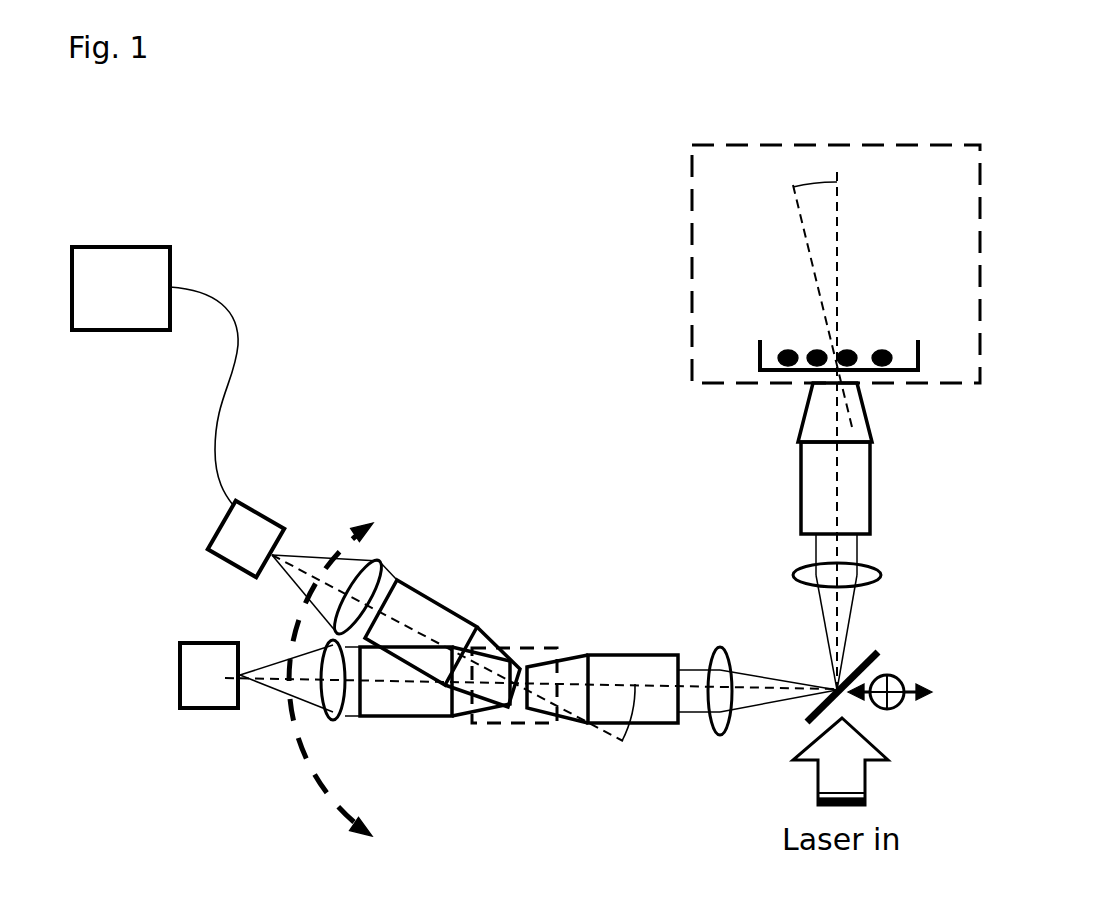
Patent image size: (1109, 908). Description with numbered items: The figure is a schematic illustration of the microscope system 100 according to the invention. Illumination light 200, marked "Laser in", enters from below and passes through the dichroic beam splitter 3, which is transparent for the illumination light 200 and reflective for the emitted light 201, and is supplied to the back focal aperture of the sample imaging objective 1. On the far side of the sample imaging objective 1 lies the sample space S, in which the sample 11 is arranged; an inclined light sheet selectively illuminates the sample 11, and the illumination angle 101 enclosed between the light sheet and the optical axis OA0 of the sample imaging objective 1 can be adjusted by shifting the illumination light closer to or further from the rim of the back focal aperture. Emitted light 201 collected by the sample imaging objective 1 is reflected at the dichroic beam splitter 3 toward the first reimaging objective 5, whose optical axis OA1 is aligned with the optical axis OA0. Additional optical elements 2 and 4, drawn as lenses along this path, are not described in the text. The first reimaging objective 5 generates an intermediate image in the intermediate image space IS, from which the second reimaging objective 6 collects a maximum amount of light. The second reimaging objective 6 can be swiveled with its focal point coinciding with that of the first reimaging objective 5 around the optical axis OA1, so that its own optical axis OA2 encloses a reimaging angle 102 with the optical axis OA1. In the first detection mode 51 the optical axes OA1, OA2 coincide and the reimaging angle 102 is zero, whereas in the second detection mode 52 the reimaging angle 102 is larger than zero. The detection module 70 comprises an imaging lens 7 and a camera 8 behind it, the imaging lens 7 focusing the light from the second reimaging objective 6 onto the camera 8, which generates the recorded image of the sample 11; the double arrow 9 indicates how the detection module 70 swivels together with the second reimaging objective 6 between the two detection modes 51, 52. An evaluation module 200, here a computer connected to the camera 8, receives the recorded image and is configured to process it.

The sample imaging objective 1 is at (873, 487).
The lens 2 is at (880, 577).
The dichroic beam splitter 3 is at (880, 653).
The lens 4 is at (720, 738).
The first reimaging objective 5 is at (638, 658).
The second reimaging objective 6 is at (423, 655).
The imaging lens 7 is at (352, 630).
The camera 8 is at (235, 523).
The double arrow 9 is at (344, 694).
The sample 11 is at (815, 356).
The first detection mode 51 is at (170, 678).
The second detection mode 52 is at (228, 490).
The detection module 70 is at (293, 398).
The microscope system 100 is at (475, 330).
The illumination angle 101 is at (817, 185).
The reimaging angle 102 is at (623, 727).
The illumination light / evaluation module 200 is at (842, 765).
The emitted light 201 is at (817, 552).
The sample space S is at (707, 282).
The intermediate image space IS is at (515, 725).
The optical axis of the sample imaging objective OA0 is at (837, 220).
The optical axis of the first reimaging objective OA1 is at (653, 683).
The optical axis of the second reimaging objective OA2 is at (590, 728).